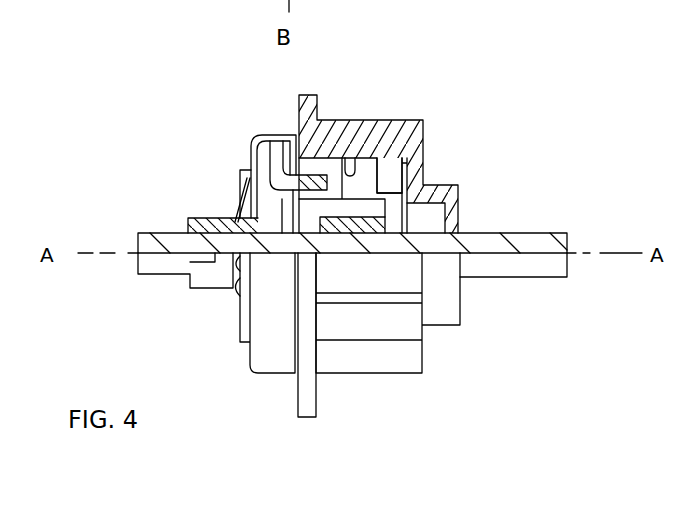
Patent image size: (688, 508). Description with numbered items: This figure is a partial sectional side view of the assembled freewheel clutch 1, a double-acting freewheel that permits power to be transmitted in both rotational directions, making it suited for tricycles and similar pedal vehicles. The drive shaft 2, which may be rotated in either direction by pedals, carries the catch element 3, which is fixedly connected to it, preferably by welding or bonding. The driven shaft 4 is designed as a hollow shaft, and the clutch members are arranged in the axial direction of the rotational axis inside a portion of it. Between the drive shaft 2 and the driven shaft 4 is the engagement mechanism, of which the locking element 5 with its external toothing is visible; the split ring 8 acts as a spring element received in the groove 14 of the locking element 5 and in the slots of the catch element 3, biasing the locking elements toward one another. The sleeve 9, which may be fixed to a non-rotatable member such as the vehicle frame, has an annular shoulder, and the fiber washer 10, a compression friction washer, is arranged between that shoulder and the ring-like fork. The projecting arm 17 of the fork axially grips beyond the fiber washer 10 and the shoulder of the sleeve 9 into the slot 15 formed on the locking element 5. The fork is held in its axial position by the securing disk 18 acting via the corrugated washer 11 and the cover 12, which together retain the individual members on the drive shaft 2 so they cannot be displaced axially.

The freewheel clutch 1 is at (478, 93).
The drive shaft 2 is at (150, 245).
The catch element 3 is at (348, 228).
The driven shaft 4 is at (459, 198).
The locking element 5 is at (367, 182).
The split ring 8 is at (355, 168).
The sleeve 9 is at (233, 222).
The fiber washer 10 is at (284, 214).
The corrugated washer 11 is at (257, 197).
The cover 12 is at (258, 152).
The groove 14 is at (405, 157).
The slot 15 is at (287, 166).
The projecting arm 17 is at (281, 157).
The securing disk 18 is at (235, 218).